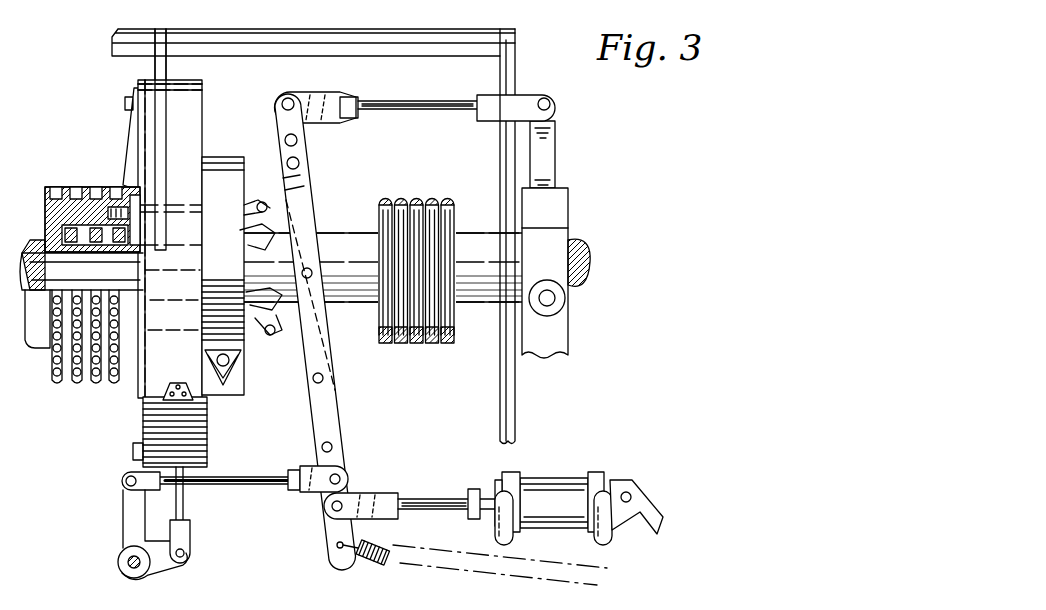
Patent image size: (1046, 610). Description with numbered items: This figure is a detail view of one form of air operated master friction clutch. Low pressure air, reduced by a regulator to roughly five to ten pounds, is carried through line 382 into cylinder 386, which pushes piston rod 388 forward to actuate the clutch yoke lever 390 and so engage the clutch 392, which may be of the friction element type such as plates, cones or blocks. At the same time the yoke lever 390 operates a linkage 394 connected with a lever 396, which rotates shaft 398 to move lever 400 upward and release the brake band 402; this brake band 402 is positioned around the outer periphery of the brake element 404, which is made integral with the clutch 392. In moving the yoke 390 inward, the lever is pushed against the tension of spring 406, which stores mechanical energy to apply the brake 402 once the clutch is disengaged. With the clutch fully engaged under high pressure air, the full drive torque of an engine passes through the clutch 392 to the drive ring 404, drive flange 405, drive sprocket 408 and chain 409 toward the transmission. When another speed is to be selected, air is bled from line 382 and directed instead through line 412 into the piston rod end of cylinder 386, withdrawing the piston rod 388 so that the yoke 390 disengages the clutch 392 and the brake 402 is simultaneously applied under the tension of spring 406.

The line 382 is at (612, 533).
The cylinder 386 is at (567, 494).
The piston rod 388 is at (442, 502).
The clutch yoke lever 390 is at (336, 428).
The clutch 392 is at (218, 160).
The linkage 394 is at (238, 484).
The lever 396 is at (125, 522).
The shaft 398 is at (135, 570).
The lever 400 is at (168, 564).
The brake band 402 is at (200, 103).
The brake element 404 is at (207, 432).
The drive flange 405 is at (128, 133).
The spring 406 is at (372, 558).
The drive sprocket 408 is at (110, 372).
The chain 409 is at (104, 188).
The line 412 is at (507, 543).